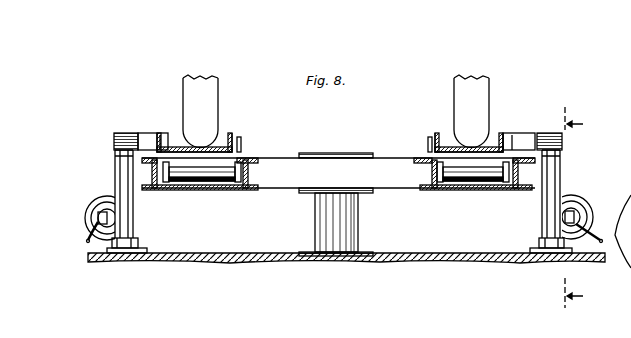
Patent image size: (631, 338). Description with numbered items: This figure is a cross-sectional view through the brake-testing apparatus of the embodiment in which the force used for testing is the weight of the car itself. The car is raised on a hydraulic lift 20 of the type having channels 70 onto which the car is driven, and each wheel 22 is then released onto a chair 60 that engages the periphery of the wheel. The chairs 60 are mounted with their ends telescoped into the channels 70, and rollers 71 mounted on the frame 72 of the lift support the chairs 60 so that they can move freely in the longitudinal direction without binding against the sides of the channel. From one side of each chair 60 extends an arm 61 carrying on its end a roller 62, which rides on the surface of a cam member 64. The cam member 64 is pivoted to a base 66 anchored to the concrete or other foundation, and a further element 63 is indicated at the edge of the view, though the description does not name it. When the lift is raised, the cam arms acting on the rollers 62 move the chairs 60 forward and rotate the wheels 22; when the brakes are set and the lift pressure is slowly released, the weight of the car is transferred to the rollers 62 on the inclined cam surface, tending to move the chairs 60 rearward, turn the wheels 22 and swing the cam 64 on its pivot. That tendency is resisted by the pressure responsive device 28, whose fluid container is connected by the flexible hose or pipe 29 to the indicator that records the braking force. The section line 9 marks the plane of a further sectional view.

The section line 9- 9 is at (579, 207).
The hydraulic lift 20 is at (315, 221).
The wheels 22 is at (200, 78).
The pressure responsive device 28 is at (611, 163).
The flexible hose or pipe 29 is at (592, 232).
The chairs 60 is at (231, 133).
The arm 61 is at (148, 133).
The roller 62 is at (125, 133).
The base plate 63 is at (627, 275).
The cam member 64 is at (137, 203).
The base 66 is at (142, 250).
The channels 70 is at (240, 137).
The rollers 71 is at (210, 184).
The frame 72 is at (258, 152).